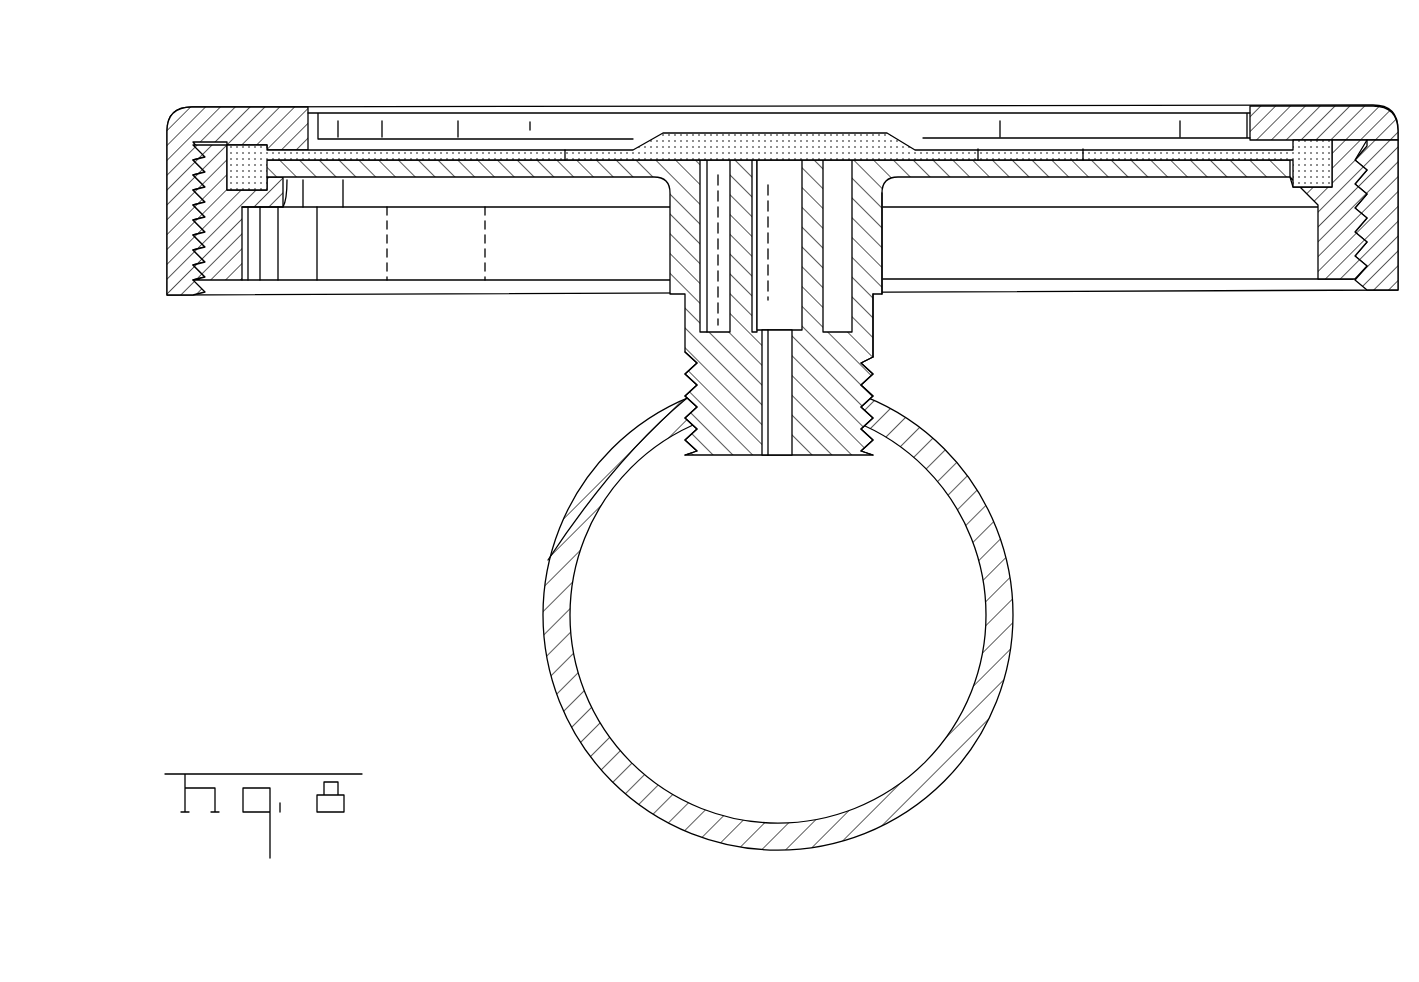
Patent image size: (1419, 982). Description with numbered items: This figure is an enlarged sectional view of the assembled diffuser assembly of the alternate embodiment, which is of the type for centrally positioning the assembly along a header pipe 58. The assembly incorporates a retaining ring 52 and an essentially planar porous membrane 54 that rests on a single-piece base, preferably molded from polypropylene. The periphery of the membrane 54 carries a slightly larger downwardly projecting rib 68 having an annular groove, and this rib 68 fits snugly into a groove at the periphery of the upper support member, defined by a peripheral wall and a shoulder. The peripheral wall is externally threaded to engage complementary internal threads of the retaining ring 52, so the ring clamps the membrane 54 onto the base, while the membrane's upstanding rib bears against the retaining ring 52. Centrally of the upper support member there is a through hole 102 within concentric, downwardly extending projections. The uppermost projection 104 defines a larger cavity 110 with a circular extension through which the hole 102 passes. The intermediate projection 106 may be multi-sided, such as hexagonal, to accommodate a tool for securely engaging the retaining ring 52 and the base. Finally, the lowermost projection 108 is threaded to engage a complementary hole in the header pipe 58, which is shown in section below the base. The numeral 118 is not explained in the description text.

The retaining ring 52 is at (1351, 100).
The porous membrane 54 is at (1014, 140).
The header pipe 58 is at (1020, 587).
The downwardly projecting rib 68 is at (1311, 165).
The through hole 102 is at (753, 200).
The uppermost projection 104 is at (882, 237).
The intermediate projection 106 is at (878, 318).
The lowermost projection 108 is at (876, 378).
The cavity 110 is at (840, 207).
The thread end 118 is at (688, 428).